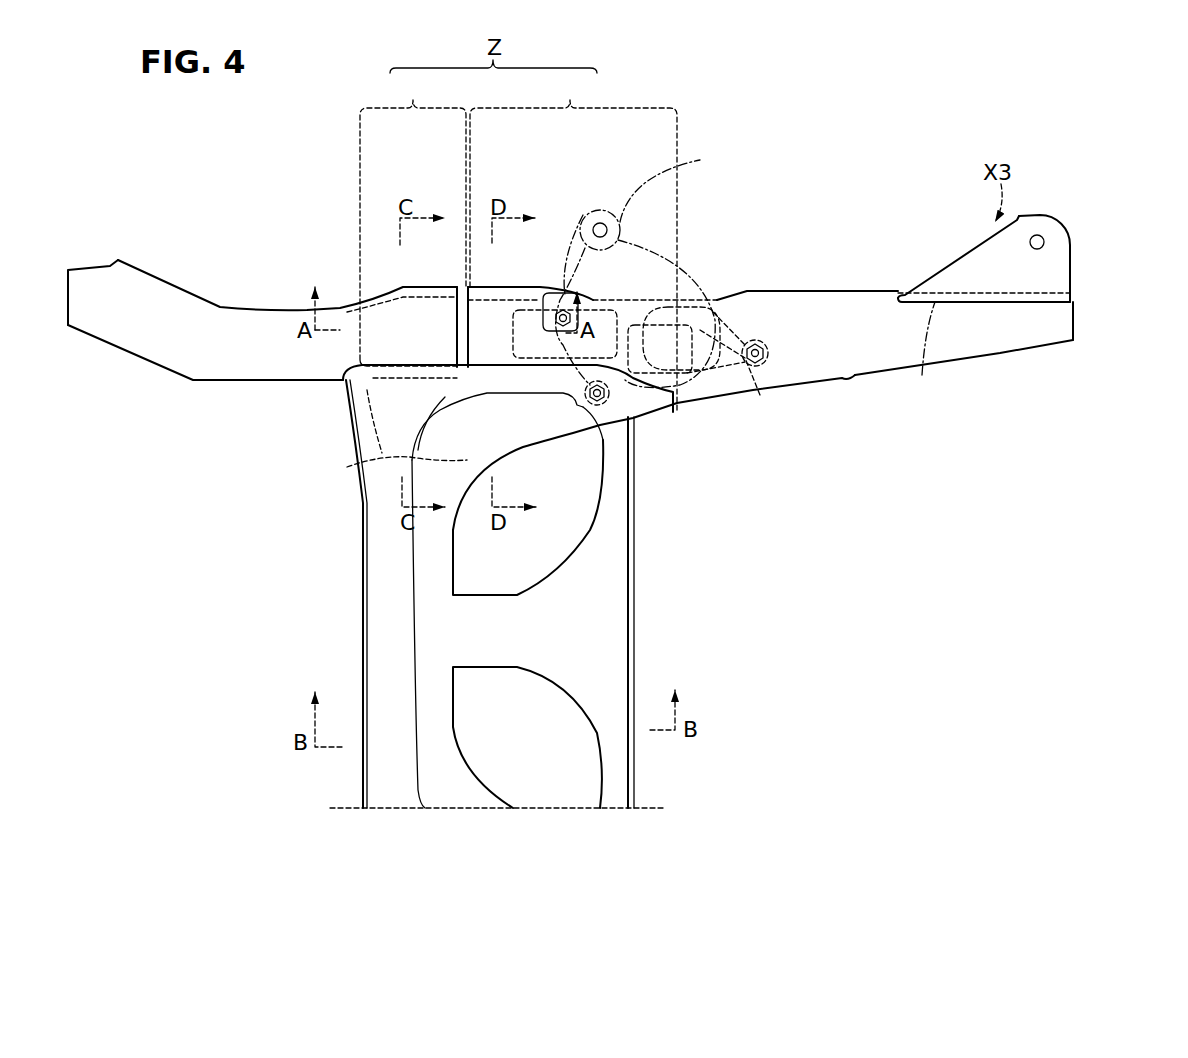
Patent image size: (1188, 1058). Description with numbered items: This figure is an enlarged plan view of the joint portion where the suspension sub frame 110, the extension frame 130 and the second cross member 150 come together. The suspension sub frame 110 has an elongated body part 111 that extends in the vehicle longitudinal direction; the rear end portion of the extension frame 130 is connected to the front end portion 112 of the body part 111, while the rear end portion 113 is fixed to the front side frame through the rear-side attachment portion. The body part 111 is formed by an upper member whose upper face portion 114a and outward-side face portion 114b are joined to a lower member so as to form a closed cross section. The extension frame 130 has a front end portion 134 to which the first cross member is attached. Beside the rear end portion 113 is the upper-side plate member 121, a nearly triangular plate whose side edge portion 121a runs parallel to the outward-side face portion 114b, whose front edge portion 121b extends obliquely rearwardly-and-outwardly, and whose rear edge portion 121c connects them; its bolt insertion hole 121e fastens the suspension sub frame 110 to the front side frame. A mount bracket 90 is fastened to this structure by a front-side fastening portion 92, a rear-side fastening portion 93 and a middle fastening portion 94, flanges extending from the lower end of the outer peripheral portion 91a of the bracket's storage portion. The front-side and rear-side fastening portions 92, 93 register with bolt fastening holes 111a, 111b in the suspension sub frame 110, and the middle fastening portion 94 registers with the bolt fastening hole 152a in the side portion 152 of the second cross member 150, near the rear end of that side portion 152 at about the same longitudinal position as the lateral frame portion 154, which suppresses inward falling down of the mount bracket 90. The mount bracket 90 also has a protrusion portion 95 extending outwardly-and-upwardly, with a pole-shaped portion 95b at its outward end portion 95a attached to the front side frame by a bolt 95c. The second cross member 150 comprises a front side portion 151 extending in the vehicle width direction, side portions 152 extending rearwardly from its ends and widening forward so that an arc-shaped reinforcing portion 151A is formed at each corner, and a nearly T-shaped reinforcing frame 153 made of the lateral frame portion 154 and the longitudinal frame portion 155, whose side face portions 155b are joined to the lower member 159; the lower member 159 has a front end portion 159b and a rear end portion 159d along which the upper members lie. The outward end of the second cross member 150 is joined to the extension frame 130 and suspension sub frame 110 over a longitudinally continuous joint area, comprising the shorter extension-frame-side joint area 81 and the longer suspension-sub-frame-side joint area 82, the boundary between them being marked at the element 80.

The extension frame 130 is at (262, 278).
The front end portion 134 is at (82, 277).
The joint portion 80 is at (458, 282).
The extension-frame-side joint area 81 is at (413, 220).
The suspension-sub-frame-side joint area 82 is at (573, 242).
The suspension sub frame 110 is at (812, 342).
The front end portion 112 is at (480, 283).
The body part 111 is at (847, 367).
The rear end portion 113 is at (1015, 330).
The upper face portion 114a is at (1073, 335).
The outward-side face portion 114b is at (918, 363).
The bolt fastening hole 111a is at (548, 310).
The bolt fastening hole 111b is at (766, 334).
The outer peripheral portion 91a is at (712, 282).
The rear-side fastening portion 93 is at (757, 368).
The upper-side plate member 121 is at (1032, 290).
The side edge portion 121a is at (993, 307).
The front edge portion 121b is at (953, 256).
The rear edge portion 121c is at (1070, 237).
The bolt insertion hole 121e is at (1066, 183).
The mount bracket 90 is at (642, 251).
The front-side fastening portion 92 is at (593, 226).
The protrusion portion 95 is at (643, 251).
The outward end portion 95a is at (655, 248).
The pole-shaped portion 95b is at (682, 158).
The bolt 95c is at (612, 222).
The second cross member 150 is at (495, 586).
The front side portion 151 is at (377, 598).
The reinforcing portion 151A is at (410, 457).
The side portion 152 is at (480, 386).
The bolt fastening hole 152a is at (580, 415).
The reinforcing frame 153 is at (610, 606).
The lateral frame portion 154 is at (625, 538).
The longitudinal frame portion 155 is at (528, 624).
The side face portion 155b is at (485, 596).
The lower member 159 is at (556, 777).
The front end portion 159b is at (362, 503).
The rear end portion 159d is at (637, 643).
The middle fastening portion 94 is at (618, 410).